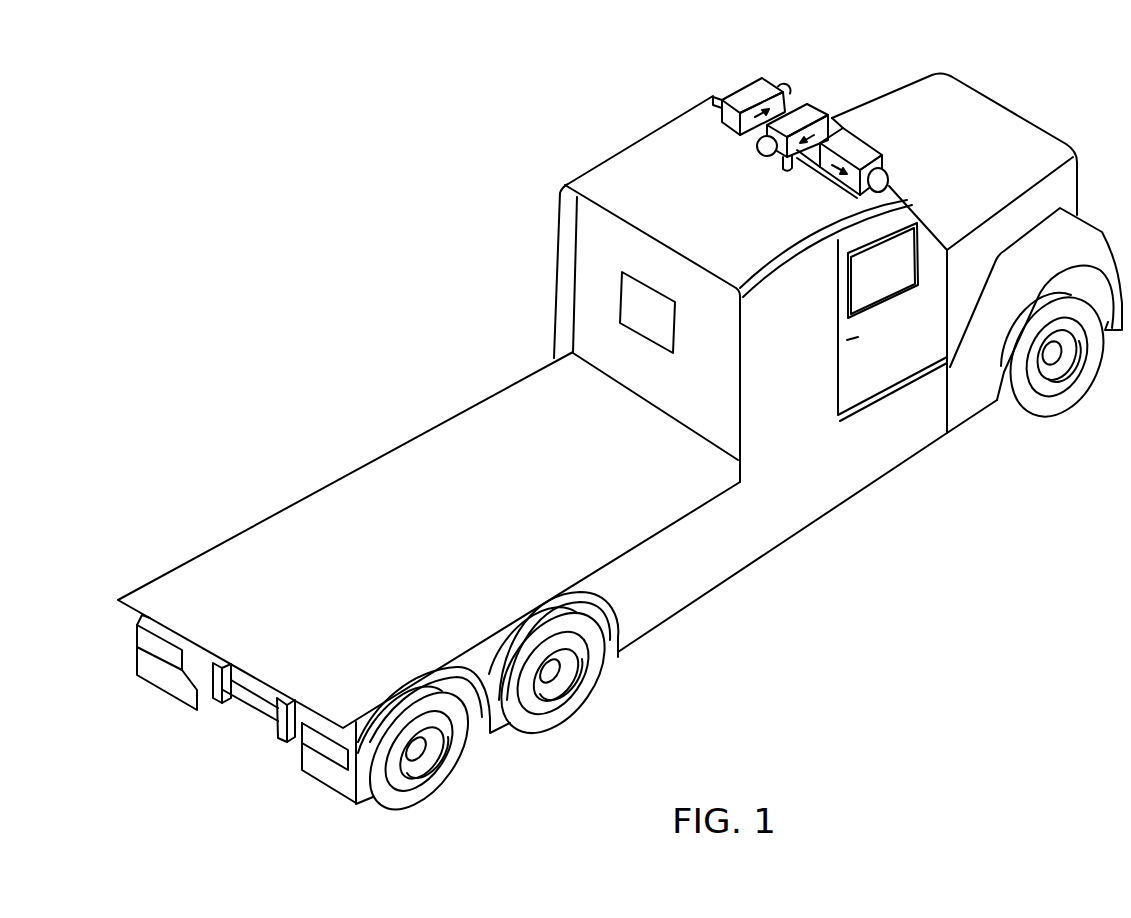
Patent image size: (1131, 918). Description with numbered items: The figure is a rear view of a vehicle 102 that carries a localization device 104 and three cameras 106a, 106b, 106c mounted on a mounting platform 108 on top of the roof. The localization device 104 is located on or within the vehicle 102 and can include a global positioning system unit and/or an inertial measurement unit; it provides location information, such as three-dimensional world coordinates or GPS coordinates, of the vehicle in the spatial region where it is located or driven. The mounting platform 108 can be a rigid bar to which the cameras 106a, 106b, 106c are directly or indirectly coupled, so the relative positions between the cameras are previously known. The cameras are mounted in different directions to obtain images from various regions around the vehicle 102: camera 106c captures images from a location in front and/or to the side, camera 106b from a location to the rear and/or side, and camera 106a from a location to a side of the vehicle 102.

The vehicle 102 is at (1005, 115).
The localization device 104 is at (620, 312).
The camera 106a is at (862, 142).
The camera 106b is at (807, 112).
The camera 106c is at (758, 92).
The mounting platform 108 is at (727, 84).